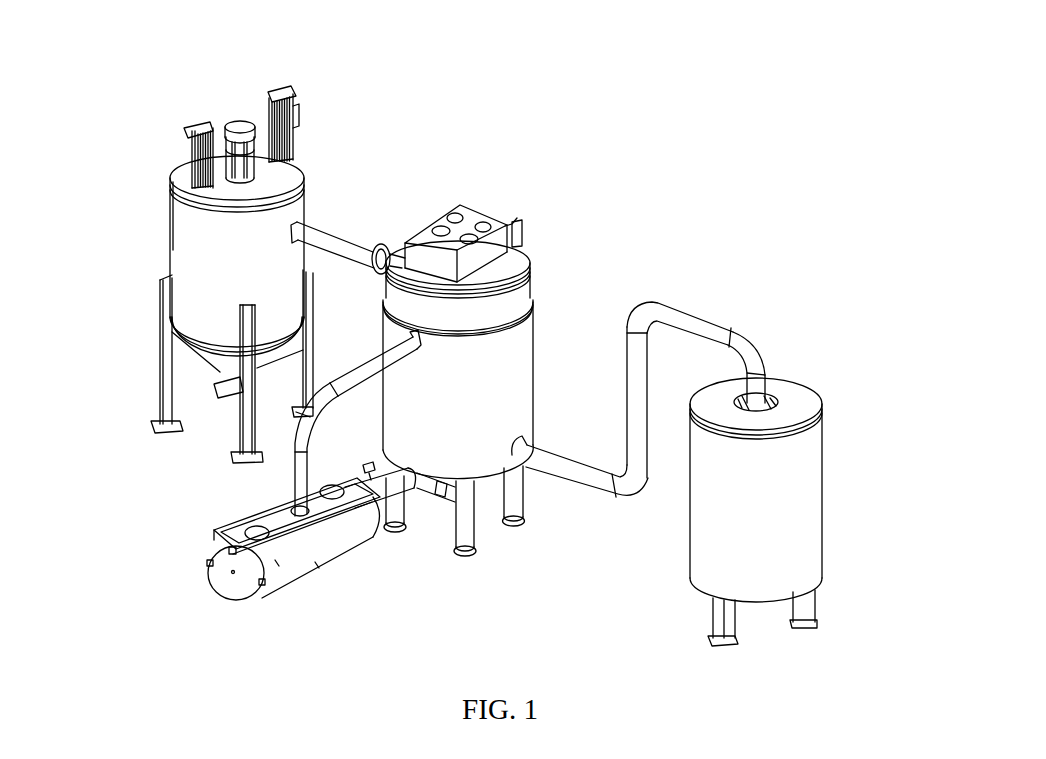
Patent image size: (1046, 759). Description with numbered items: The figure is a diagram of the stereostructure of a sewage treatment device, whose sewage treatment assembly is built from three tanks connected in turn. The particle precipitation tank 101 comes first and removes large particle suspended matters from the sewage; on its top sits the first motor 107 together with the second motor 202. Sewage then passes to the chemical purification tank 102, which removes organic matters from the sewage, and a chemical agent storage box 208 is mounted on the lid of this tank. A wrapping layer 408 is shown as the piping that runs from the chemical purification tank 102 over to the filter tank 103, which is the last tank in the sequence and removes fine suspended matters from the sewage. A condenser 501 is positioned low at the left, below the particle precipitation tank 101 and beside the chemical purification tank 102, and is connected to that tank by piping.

The particle precipitation tank 101 is at (198, 252).
The first motor 107 is at (231, 127).
The second motor 202 is at (295, 112).
The chemical purification tank 102 is at (493, 310).
The chemical agent storage box 208 is at (469, 218).
The wrapping layer 408 is at (503, 372).
The filter tank 103 is at (773, 515).
The condenser 501 is at (215, 533).